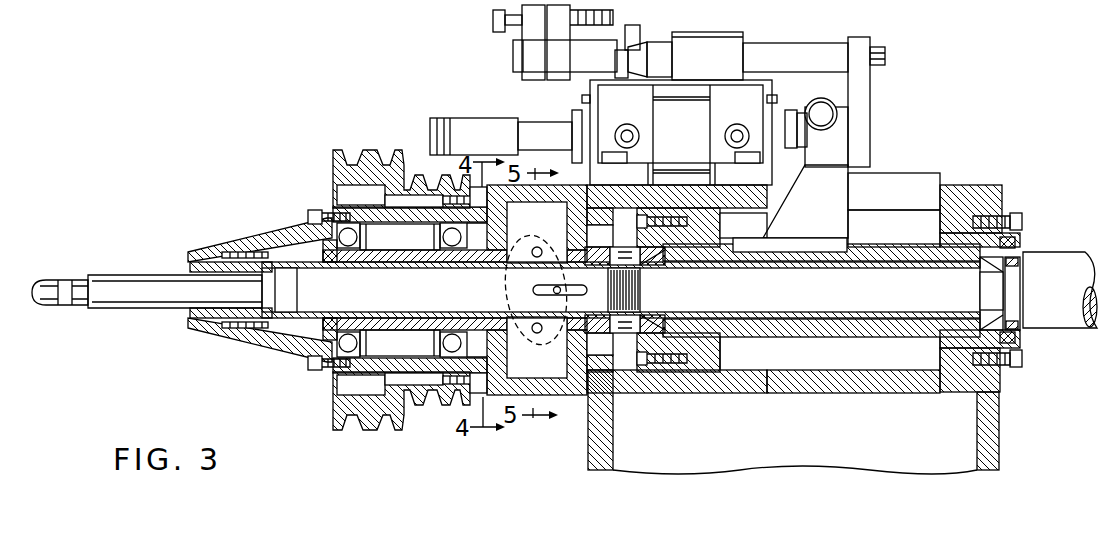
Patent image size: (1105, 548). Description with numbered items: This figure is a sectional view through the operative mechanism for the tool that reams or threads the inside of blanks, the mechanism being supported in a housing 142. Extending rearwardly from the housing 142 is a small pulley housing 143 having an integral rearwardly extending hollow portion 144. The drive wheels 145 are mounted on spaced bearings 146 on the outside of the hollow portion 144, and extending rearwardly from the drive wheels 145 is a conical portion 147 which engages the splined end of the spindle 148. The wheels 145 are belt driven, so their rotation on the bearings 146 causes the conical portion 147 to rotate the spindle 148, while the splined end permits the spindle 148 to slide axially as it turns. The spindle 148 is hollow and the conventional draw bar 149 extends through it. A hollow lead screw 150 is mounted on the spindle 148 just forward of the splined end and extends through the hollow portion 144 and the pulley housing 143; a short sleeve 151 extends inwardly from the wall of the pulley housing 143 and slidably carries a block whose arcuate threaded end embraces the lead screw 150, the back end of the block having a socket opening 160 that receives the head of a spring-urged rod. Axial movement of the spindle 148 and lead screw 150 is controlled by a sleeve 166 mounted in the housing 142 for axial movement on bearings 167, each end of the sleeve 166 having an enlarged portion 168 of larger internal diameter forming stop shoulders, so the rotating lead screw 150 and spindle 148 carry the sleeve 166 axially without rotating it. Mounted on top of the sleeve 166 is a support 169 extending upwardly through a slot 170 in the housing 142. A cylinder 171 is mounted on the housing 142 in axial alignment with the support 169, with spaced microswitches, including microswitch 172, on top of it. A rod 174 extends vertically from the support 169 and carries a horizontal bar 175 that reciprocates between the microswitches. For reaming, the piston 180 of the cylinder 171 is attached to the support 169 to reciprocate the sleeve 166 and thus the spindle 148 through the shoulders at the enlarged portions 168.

The housing 142 is at (993, 415).
The pulley housing 143 is at (560, 392).
The hollow portion 144 is at (383, 367).
The drive wheels 145 is at (357, 150).
The bearings 146 is at (304, 230).
The conical portion 147 is at (277, 233).
The spindle 148 is at (177, 290).
The draw bar 149 is at (67, 283).
The lead screw 150 is at (283, 367).
The short sleeve 151 is at (550, 262).
The socket opening 160 is at (622, 330).
The sleeve 166 is at (897, 330).
The bearings 167 is at (1017, 237).
The enlarged portion 168 is at (1015, 250).
The support 169 is at (830, 190).
The slot 170 is at (915, 190).
The cylinder 171 is at (695, 163).
The microswitch 172 is at (708, 45).
The rod 174 is at (858, 92).
The horizontal bar 175 is at (785, 53).
The piston 180 is at (790, 120).